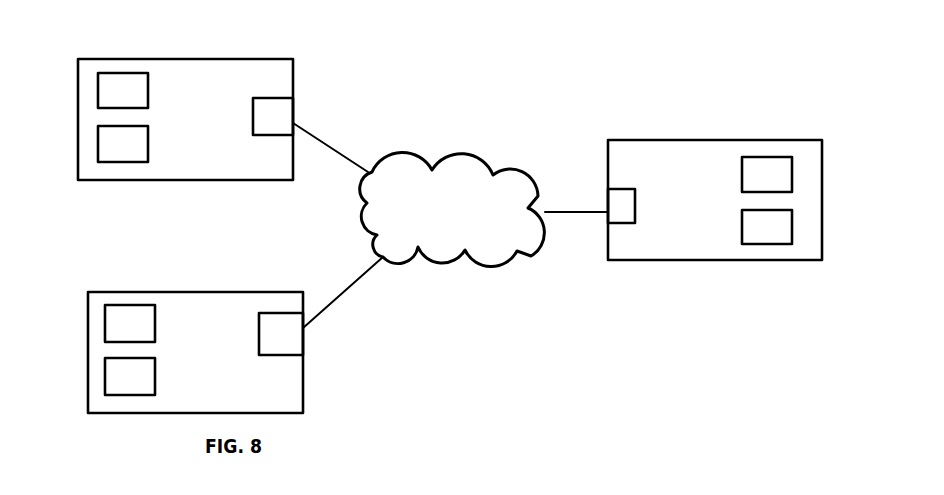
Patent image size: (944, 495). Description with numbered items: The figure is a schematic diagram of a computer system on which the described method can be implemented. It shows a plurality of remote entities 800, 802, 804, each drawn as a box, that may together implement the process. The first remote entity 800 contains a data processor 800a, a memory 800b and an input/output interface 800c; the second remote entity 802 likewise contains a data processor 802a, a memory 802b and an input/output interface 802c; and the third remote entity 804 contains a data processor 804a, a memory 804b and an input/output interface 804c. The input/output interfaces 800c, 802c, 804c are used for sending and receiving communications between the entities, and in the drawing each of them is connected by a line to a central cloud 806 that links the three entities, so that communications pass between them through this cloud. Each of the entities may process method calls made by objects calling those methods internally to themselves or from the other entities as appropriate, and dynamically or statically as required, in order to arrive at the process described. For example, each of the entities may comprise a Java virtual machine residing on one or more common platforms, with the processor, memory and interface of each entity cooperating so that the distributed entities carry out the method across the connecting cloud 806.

The remote entity 800 is at (238, 59).
The data processor 800a is at (117, 89).
The memory 800b is at (117, 148).
The input/output interface 800c is at (357, 92).
The remote entity 802 is at (124, 292).
The data processor 802a is at (120, 330).
The memory 802b is at (120, 380).
The input/output interface 802c is at (287, 347).
The remote entity 804 is at (823, 238).
The data processor 804a is at (812, 122).
The memory 804b is at (778, 235).
The input/output interface 804c is at (635, 223).
The network 806 is at (460, 152).